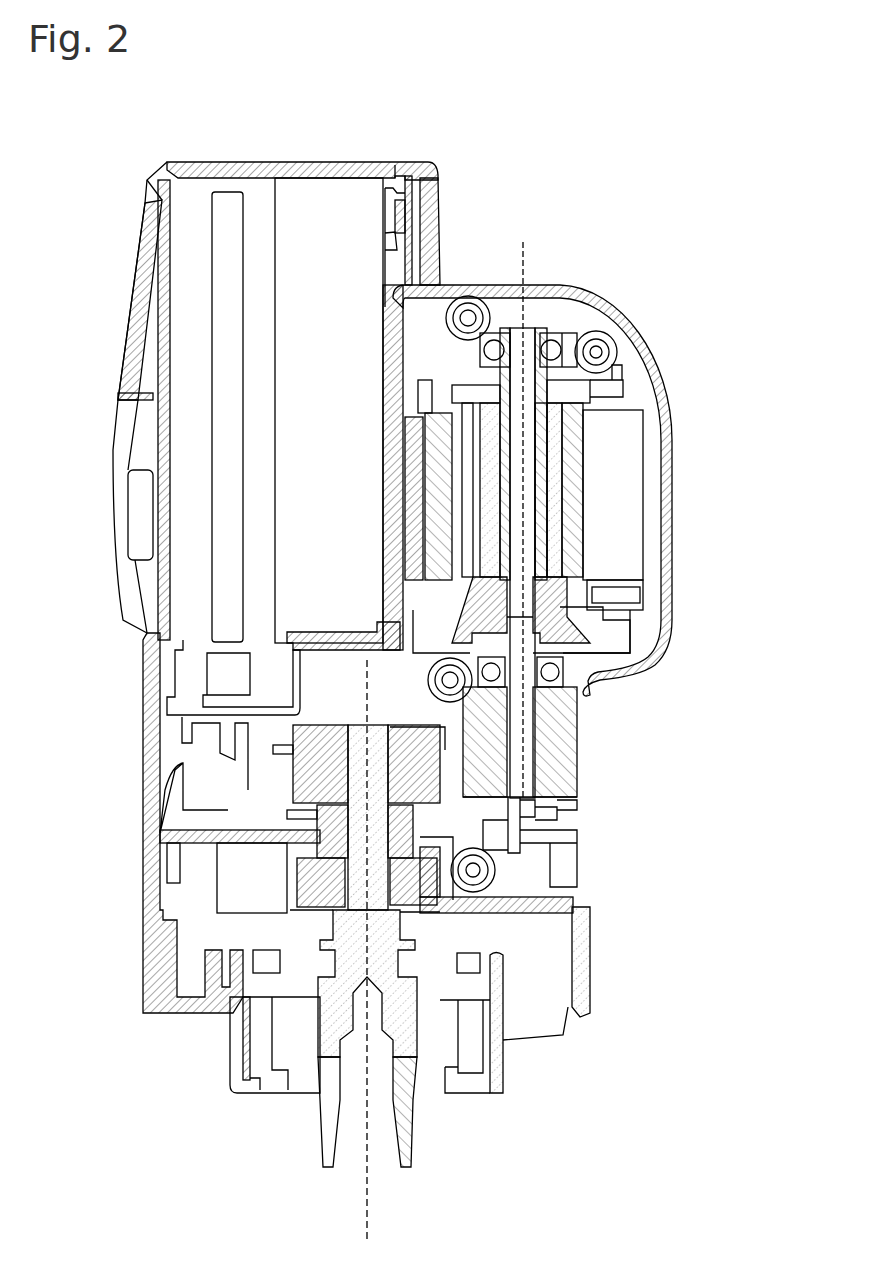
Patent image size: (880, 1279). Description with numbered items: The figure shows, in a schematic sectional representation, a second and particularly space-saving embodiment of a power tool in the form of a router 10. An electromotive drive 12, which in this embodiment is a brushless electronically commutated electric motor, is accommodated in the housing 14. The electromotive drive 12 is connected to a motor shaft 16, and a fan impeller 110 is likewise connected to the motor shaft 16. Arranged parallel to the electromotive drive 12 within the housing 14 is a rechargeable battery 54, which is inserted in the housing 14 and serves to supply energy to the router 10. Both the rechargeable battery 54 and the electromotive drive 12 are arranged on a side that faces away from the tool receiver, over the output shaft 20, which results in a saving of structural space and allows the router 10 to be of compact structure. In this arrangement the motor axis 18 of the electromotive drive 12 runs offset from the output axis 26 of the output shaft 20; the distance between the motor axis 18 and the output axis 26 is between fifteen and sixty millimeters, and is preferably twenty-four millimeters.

The router 10 is at (658, 153).
The electromotive drive 12 is at (600, 524).
The housing 14 is at (655, 355).
The motor shaft 16 is at (507, 292).
The motor axis 18 is at (523, 242).
The output shaft 20 is at (350, 940).
The output axis 26 is at (370, 1222).
The rechargeable battery 54 is at (313, 210).
The fan impeller 110 is at (612, 598).